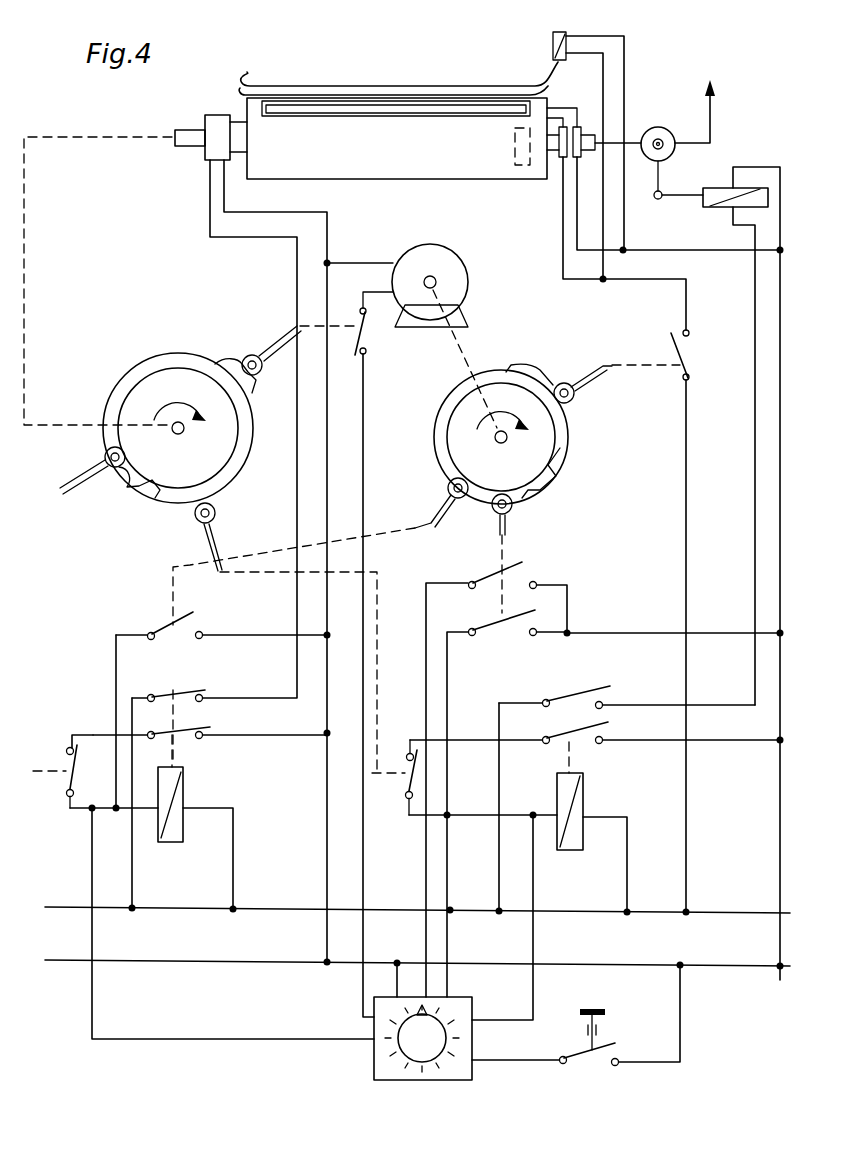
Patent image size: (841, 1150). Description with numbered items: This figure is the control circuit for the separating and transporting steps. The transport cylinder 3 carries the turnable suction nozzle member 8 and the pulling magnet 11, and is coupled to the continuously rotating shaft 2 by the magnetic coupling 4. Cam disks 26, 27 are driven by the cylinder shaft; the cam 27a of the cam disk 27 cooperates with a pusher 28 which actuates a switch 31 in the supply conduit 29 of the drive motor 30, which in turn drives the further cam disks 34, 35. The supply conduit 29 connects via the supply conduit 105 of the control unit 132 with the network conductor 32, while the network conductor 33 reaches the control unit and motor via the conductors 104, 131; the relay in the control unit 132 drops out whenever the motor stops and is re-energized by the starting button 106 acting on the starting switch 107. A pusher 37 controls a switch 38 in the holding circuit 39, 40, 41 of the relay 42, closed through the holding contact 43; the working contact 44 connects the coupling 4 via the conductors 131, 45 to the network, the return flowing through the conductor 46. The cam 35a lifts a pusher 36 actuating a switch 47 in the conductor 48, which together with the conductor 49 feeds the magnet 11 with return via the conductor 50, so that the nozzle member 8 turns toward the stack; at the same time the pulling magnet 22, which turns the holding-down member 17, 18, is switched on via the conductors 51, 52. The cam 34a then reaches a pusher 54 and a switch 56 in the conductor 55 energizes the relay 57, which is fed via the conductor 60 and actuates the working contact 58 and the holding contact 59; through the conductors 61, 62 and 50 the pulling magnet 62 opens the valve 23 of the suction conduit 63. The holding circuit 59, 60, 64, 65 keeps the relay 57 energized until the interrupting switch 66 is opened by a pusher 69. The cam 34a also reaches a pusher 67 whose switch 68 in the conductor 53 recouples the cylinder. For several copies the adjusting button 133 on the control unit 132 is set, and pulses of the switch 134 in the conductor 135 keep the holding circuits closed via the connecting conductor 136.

The shaft 2 is at (188, 133).
The transport cylinder 3 is at (420, 172).
The magnetic coupling 4 is at (218, 122).
The suction nozzle member 8 is at (445, 100).
The pulling magnet 11 is at (521, 166).
The holding-down member 17 is at (398, 63).
The holding-down member 18 is at (353, 87).
The pulling magnet 22 is at (563, 32).
The valve 23 is at (659, 127).
The cam disk 26 is at (148, 398).
The cam disk 27 is at (172, 365).
The cam 27a is at (238, 370).
The pusher 28 is at (262, 357).
The supply conduit 29 is at (365, 408).
The drive motor 30 is at (464, 278).
The switch 31 is at (366, 335).
The network conductor 32 is at (717, 912).
The network conductor 33 is at (710, 968).
The cam disk 34 is at (560, 455).
The cam 34a is at (560, 475).
The cam disk 35 is at (568, 428).
The cam 35a is at (525, 370).
The pusher 36 is at (570, 384).
The pusher 37 is at (108, 450).
The switch 38 is at (78, 758).
The holding circuit conductor 39 is at (122, 815).
The holding circuit conductor 40 is at (93, 733).
The holding circuit conductor 41 is at (275, 740).
The relay 42 is at (178, 840).
The holding contact 43 is at (187, 740).
The working contact 44 is at (180, 693).
The conductor 45 is at (252, 240).
The conductor 46 is at (235, 865).
The switch 47 is at (695, 352).
The conductor 48 is at (686, 513).
The conductor 49 is at (715, 253).
The conductor 50 is at (780, 392).
The conductor 51 is at (603, 87).
The conductor 52 is at (626, 50).
The conductor 53 is at (237, 633).
The pusher 54 is at (518, 514).
The conductor 55 is at (612, 630).
The switch 56 is at (510, 622).
The relay 57 is at (572, 852).
The working contact 58 is at (577, 735).
The holding contact 59 is at (588, 692).
The conductor 60 is at (648, 852).
The conductor 61 is at (500, 837).
The pulling magnet 62 is at (715, 188).
The suction conduit 63 is at (712, 103).
The conductor 64 is at (470, 733).
The conductor 65 is at (723, 742).
The interrupting switch 66 is at (405, 780).
The pusher 67 is at (435, 525).
The switch 68 is at (165, 630).
The pusher 69 is at (216, 521).
The conductor 104 is at (397, 977).
The supply conduit 105 is at (452, 950).
The starting button 106 is at (592, 1008).
The starting switch 107 is at (580, 1057).
The conductor 131 is at (333, 237).
The control unit 132 is at (452, 1070).
The adjusting button 133 is at (415, 1043).
The switch 134 is at (515, 565).
The conductor 135 is at (427, 632).
The connecting conductor 136 is at (91, 930).